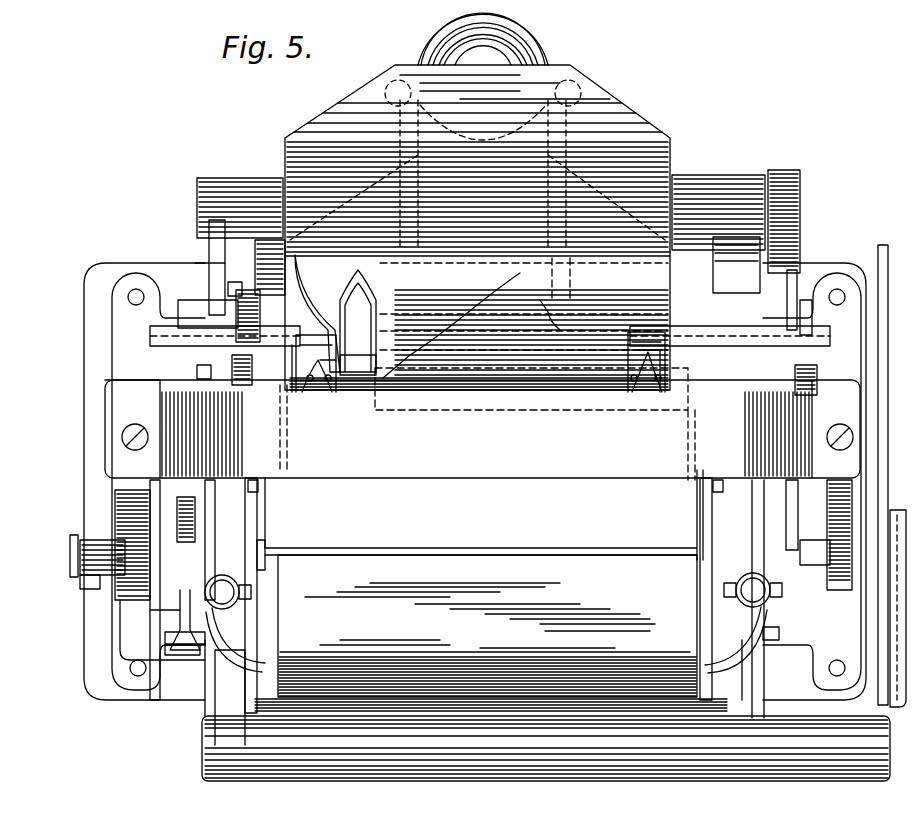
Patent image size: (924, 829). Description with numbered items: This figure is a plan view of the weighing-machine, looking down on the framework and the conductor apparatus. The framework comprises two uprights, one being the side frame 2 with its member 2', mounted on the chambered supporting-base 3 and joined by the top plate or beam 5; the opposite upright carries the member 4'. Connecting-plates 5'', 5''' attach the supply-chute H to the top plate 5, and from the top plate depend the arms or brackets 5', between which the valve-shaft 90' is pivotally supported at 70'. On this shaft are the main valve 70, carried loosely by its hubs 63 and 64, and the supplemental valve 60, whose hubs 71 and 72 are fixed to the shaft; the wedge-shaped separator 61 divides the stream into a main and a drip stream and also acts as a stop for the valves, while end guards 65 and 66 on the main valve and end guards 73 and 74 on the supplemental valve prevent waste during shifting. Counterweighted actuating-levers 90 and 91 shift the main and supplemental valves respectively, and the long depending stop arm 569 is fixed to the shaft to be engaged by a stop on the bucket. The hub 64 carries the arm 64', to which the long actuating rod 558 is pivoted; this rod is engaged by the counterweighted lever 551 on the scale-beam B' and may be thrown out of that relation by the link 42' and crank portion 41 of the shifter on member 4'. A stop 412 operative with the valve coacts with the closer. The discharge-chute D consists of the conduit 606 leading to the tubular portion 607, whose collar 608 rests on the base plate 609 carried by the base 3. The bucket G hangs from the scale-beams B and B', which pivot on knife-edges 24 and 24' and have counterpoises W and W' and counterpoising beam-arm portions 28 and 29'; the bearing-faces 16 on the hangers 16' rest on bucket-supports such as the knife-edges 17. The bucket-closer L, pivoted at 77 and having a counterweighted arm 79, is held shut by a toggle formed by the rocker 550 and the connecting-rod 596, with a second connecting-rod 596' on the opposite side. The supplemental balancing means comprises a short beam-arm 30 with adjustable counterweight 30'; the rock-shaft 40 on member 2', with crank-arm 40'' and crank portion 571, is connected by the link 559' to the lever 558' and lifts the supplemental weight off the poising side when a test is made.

The conduit 606 is at (632, 130).
The tubular portion 607 is at (430, 50).
The annular flange or collar 608 is at (522, 36).
The discharge-chute D is at (511, 48).
The base plate or frame 609 is at (572, 279).
The supply-chute H is at (555, 365).
The main valve 70 is at (451, 322).
The valve-shaft 90' is at (525, 311).
The supplemental valve 60 is at (322, 300).
The separator 61 is at (362, 300).
The hub 63 is at (358, 371).
The connecting-plates 5'' is at (316, 387).
The bracket 5''' is at (633, 371).
The hub 64 is at (660, 380).
The hub 72 is at (340, 380).
The end guard 65 is at (375, 412).
The end guard 66 is at (688, 414).
The hub 71 is at (285, 370).
The end guard 73 is at (283, 405).
The end guard 74 is at (341, 420).
The top plate or beam 5 is at (482, 443).
The lever 558' is at (135, 429).
The actuating rod 558 is at (782, 430).
The bucket-closer L is at (700, 528).
The bucket G is at (491, 633).
The counterpoise W' is at (530, 748).
The side frame 2 is at (144, 481).
The member of side frame 4' is at (814, 481).
The stop arm 569 is at (800, 320).
The counterpoise W is at (468, 212).
The scale-beam B is at (495, 444).
The actuating-lever 91 is at (265, 256).
The actuating-lever 90 is at (755, 261).
The counterweighted lever 551 is at (780, 290).
The arm 64' is at (825, 289).
The bucket-counterpoising portion 28 is at (213, 258).
The stop 412 is at (230, 286).
The pivots or knife-edges 24 is at (488, 461).
The rocker 550 is at (195, 330).
The arms or brackets 5' is at (499, 375).
The bearing-faces 16 is at (489, 487).
The hangers 16' is at (486, 640).
The counterweighted arm 79 is at (262, 648).
The closer pivot 77 is at (268, 568).
The connecting-rod 596 is at (285, 502).
The connecting-rod 596' is at (687, 491).
The link 42' is at (804, 515).
The crank portion 41 is at (805, 548).
The pivot 70' is at (731, 530).
The bucket-counterpoising portion 29' is at (486, 678).
The scale-beam B' is at (210, 697).
The pivots or knife-edges 24' is at (185, 654).
The member of side frame 2' is at (119, 545).
The link 559' is at (98, 590).
The adjustable counterweight 30' is at (218, 540).
The rock-shaft 40 is at (81, 556).
The crank-arm 40'' is at (72, 587).
The crank or link portion 571 is at (125, 598).
The supporting-base 3 is at (140, 630).
The bucket-supports 17 is at (186, 610).
The beam-arm 30 is at (174, 623).